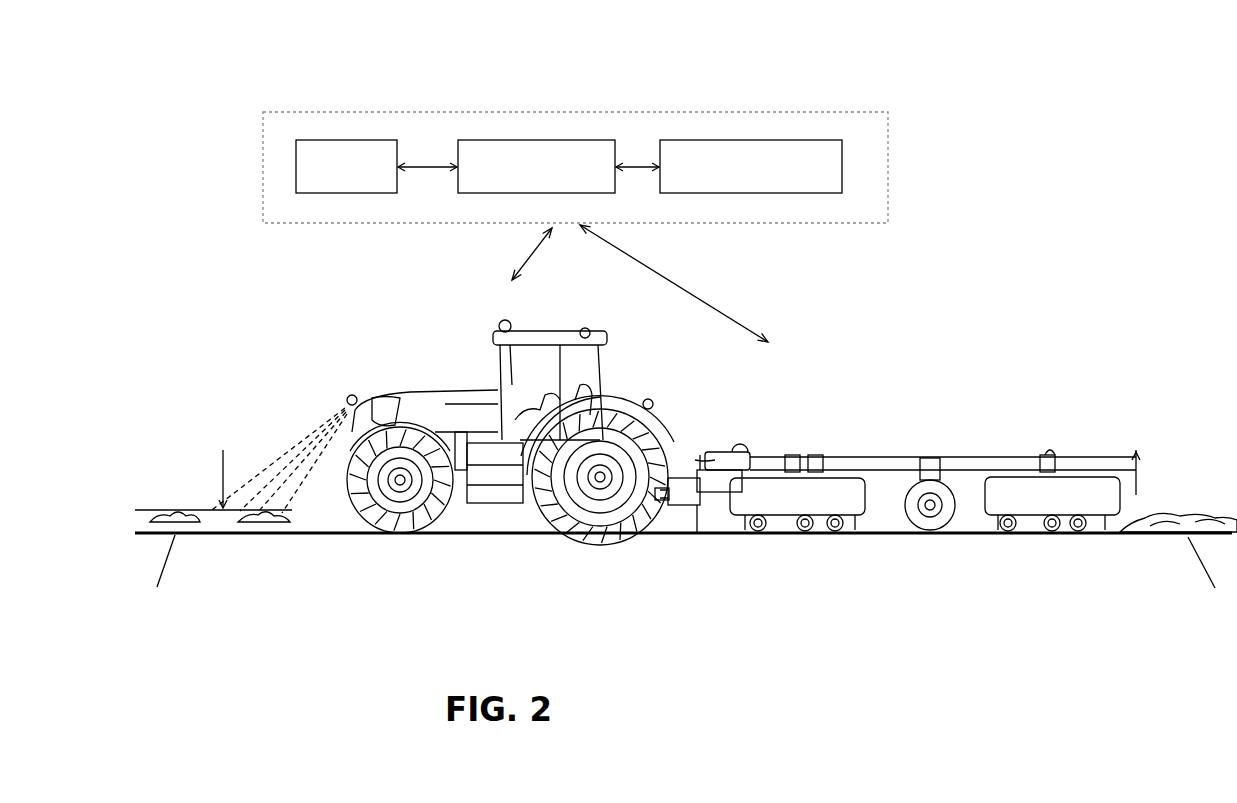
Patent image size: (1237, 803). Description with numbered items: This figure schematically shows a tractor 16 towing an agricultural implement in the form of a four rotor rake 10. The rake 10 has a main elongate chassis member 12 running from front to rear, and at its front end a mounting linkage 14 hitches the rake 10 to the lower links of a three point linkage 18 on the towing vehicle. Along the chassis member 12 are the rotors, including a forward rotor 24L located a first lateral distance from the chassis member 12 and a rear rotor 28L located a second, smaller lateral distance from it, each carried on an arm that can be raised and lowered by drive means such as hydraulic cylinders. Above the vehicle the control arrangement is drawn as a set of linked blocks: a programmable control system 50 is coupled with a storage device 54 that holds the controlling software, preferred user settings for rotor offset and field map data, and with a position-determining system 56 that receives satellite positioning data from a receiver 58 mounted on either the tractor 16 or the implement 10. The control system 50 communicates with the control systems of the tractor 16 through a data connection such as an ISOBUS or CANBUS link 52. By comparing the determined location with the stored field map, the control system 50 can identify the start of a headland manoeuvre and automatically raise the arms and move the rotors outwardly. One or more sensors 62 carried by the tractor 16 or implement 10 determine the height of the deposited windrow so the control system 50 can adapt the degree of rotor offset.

The four rotor rake 10 is at (891, 451).
The main elongate chassis member 12 is at (895, 460).
The mounting linkage 14 is at (679, 492).
The tractor 16 is at (220, 327).
The three point linkage 18 is at (692, 486).
The forward rotor 24L is at (822, 470).
The rear rotor 28L is at (1075, 470).
The programmable control system 50 is at (502, 140).
The data connection link 52 is at (664, 500).
The storage device 54 is at (348, 140).
The position-determining system 56 is at (750, 140).
The receiver 58 is at (500, 328).
The sensor 62 is at (350, 404).